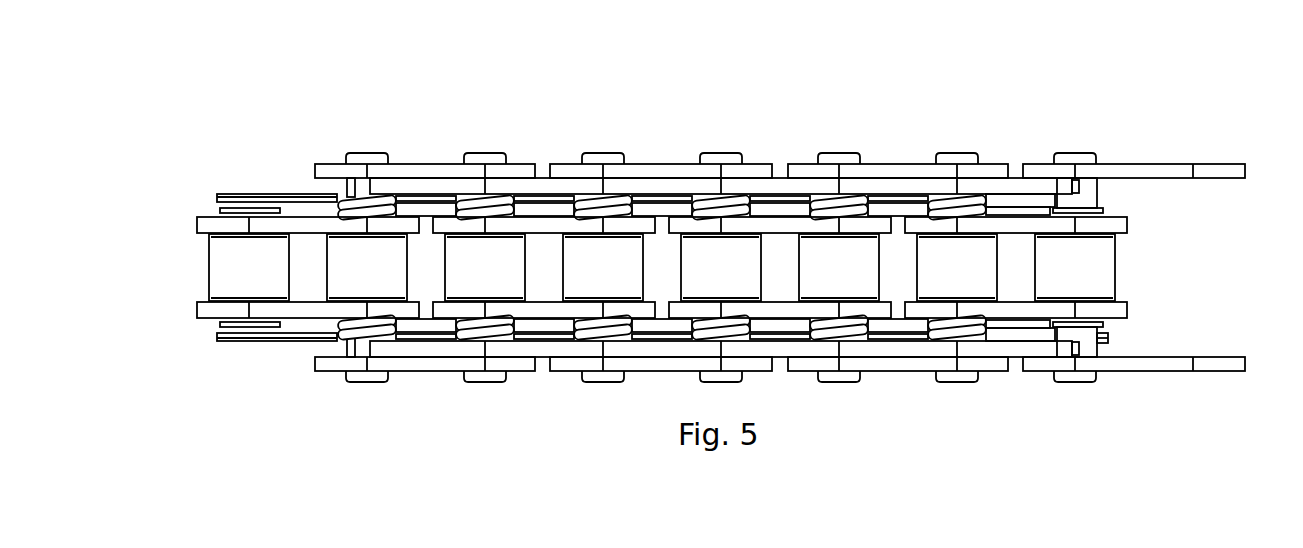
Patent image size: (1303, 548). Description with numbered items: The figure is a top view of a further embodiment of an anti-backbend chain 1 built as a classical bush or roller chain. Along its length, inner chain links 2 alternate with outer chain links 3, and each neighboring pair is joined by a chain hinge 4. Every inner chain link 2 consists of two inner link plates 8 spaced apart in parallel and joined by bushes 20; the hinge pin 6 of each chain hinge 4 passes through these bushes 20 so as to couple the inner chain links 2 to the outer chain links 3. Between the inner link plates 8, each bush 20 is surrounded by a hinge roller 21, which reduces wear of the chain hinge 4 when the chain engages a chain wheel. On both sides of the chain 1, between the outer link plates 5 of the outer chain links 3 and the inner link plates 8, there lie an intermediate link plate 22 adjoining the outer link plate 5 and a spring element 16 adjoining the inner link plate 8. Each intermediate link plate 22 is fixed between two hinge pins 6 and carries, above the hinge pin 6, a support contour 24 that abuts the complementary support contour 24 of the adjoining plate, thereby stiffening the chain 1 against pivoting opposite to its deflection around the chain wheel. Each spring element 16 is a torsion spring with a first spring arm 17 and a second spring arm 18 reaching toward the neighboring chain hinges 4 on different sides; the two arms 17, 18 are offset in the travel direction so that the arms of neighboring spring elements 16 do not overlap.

The anti-backbend chain 1 is at (269, 170).
The inner chain link 2 is at (263, 313).
The outer chain link 3 is at (432, 164).
The chain hinge 4 is at (628, 164).
The outer link plate 5 is at (330, 170).
The hinge pin 6 is at (718, 160).
The inner link plate 8 is at (205, 225).
The spring element 16 is at (982, 198).
The first spring arm 17 is at (300, 325).
The second spring arm 18 is at (438, 345).
The bush 20 is at (227, 210).
The hinge roller 21 is at (220, 270).
The intermediate link plate 22 is at (775, 188).
The support contour 24 is at (1080, 187).